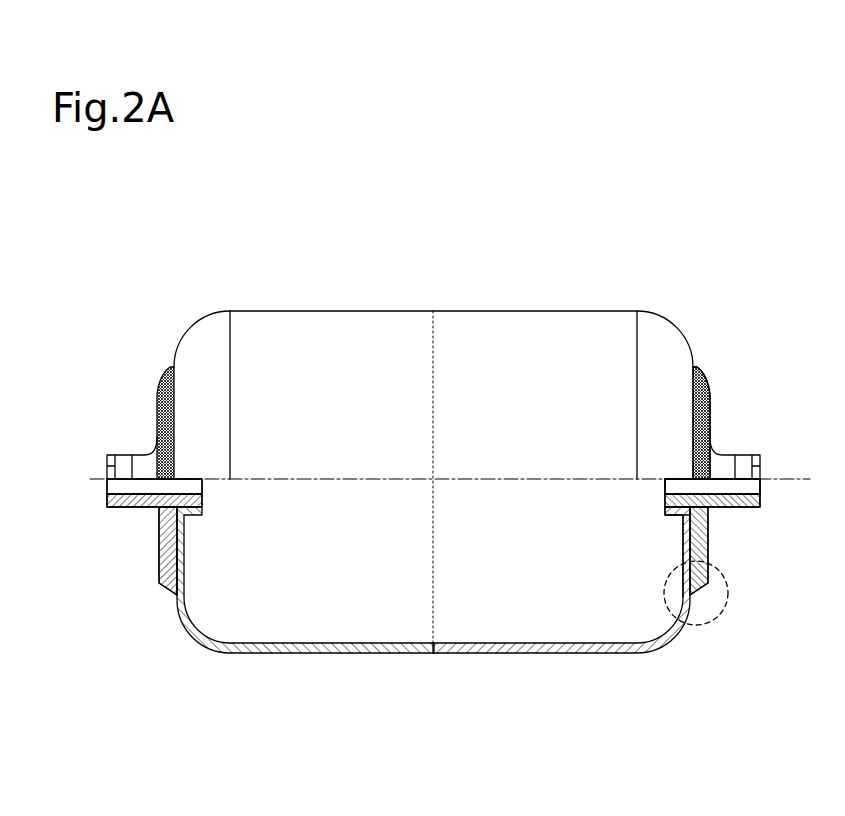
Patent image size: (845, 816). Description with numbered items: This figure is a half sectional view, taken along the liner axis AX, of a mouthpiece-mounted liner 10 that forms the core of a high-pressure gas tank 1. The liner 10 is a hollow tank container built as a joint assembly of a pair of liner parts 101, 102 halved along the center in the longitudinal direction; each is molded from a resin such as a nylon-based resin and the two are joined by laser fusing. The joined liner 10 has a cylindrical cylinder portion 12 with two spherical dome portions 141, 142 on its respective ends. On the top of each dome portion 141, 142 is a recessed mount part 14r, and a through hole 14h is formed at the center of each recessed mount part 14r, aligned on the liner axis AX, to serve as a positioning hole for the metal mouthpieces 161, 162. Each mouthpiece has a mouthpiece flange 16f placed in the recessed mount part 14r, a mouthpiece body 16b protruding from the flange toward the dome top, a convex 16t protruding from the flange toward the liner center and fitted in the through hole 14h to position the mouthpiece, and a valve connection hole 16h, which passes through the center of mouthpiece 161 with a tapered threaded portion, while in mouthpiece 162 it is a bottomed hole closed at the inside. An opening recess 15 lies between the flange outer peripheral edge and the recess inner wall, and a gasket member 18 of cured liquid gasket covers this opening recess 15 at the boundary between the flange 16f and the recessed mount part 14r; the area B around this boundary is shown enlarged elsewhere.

The pressure vessel 1 is at (698, 592).
The liner 10 is at (595, 162).
The liner part 101 is at (538, 345).
The liner part 102 is at (417, 340).
The cylinder portion 12 is at (637, 297).
The dome portion 141 is at (668, 352).
The dome portion 142 is at (205, 345).
The through hole 14h is at (665, 513).
The recessed mount part 14r is at (683, 545).
The opening recess 15 is at (708, 427).
The mouthpiece 161 is at (717, 527).
The mouthpiece 162 is at (147, 523).
The valve connection hole 16h is at (688, 490).
The convex 16t is at (662, 495).
The mouthpiece body 16b is at (717, 507).
The mouthpiece flange 16f is at (717, 528).
The gasket member 18 is at (158, 383).
The liner axis AX is at (775, 475).
The area B is at (709, 603).